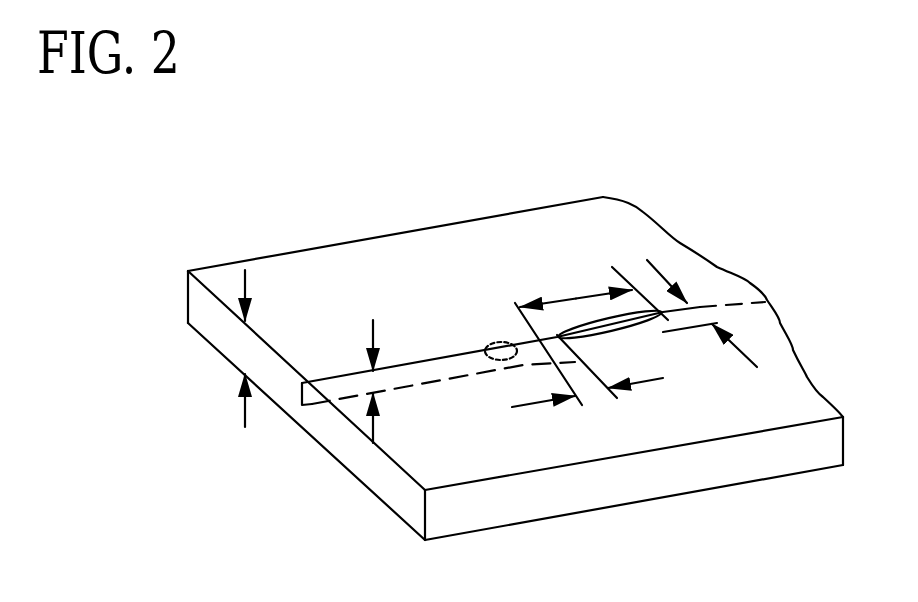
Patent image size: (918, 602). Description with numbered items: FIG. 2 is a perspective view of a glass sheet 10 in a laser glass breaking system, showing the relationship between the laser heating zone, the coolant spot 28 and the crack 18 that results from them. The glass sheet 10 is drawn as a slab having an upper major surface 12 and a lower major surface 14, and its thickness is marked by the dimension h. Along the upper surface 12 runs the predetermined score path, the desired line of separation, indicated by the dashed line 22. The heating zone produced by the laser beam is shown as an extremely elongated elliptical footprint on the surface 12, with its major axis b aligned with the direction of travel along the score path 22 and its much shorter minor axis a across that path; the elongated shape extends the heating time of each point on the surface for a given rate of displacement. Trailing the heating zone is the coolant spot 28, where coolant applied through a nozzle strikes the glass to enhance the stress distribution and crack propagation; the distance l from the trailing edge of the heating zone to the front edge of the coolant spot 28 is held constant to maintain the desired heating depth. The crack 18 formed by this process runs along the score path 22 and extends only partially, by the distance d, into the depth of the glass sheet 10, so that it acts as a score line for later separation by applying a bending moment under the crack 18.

The glass sheet 10 is at (537, 208).
The upper major surface 12 is at (300, 268).
The lower major surface 14 is at (273, 400).
The crack 18 is at (443, 381).
The dashed line (predetermined score path) 22 is at (738, 305).
The coolant spot 28 is at (500, 340).
The thickness of glass sheet h is at (245, 333).
The distance (crack depth) d is at (373, 378).
The major axis b is at (587, 293).
The minor axis a is at (692, 306).
The distance l is at (603, 390).